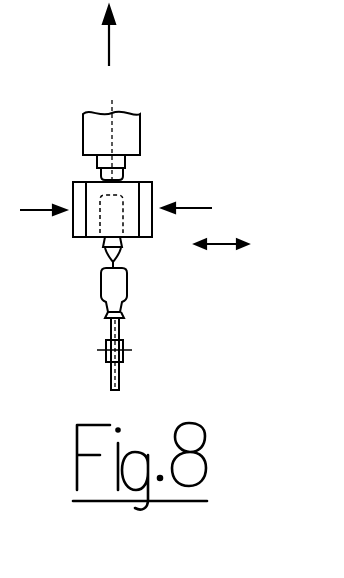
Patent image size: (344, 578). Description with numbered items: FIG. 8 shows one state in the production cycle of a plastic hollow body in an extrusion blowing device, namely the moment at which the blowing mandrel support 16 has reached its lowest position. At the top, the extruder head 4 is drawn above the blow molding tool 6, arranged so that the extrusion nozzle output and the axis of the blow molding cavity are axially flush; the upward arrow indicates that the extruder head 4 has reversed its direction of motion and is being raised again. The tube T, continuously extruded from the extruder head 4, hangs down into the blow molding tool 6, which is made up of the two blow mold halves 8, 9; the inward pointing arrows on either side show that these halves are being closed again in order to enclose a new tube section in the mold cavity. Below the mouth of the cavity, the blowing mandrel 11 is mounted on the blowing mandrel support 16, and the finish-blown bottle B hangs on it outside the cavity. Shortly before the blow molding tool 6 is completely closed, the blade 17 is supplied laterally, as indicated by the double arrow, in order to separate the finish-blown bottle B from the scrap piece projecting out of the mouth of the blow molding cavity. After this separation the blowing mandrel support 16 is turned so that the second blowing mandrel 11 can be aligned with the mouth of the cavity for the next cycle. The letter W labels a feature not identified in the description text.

The extruder head 4 is at (131, 123).
The blow molding tool 6 is at (121, 121).
The tube T is at (125, 178).
The blow mold half 8 is at (151, 193).
The blow mold half 9 is at (124, 239).
The workpiece W is at (103, 244).
The finish-blown bottle B is at (101, 292).
The blowing mandrel support 16 is at (122, 360).
The blowing mandrel 11 is at (120, 333).
The blade 17 is at (137, 244).